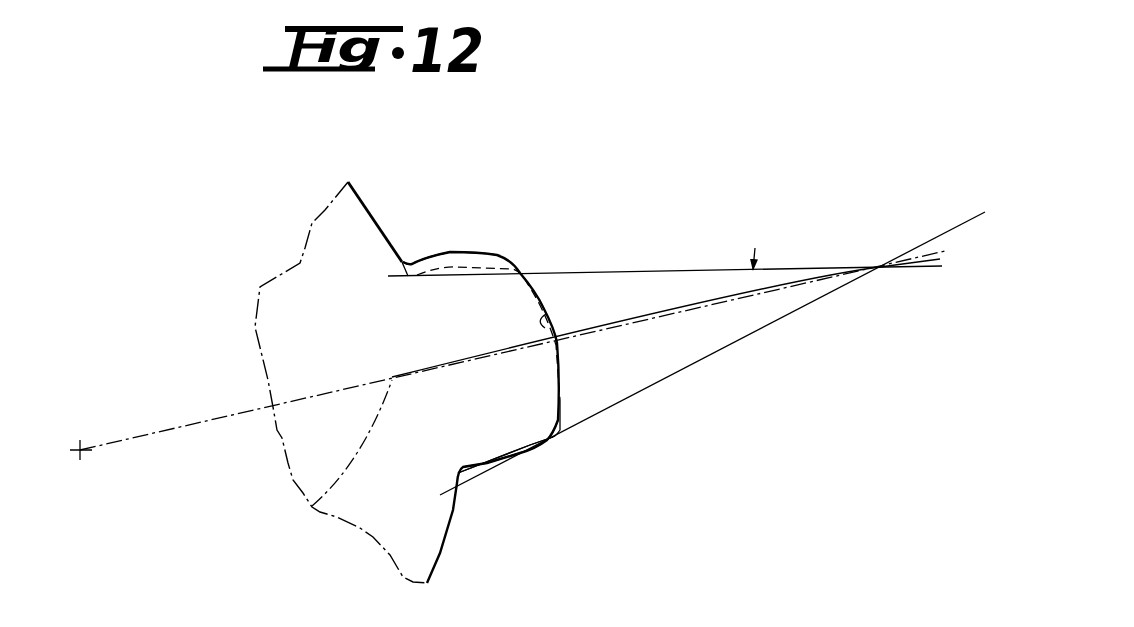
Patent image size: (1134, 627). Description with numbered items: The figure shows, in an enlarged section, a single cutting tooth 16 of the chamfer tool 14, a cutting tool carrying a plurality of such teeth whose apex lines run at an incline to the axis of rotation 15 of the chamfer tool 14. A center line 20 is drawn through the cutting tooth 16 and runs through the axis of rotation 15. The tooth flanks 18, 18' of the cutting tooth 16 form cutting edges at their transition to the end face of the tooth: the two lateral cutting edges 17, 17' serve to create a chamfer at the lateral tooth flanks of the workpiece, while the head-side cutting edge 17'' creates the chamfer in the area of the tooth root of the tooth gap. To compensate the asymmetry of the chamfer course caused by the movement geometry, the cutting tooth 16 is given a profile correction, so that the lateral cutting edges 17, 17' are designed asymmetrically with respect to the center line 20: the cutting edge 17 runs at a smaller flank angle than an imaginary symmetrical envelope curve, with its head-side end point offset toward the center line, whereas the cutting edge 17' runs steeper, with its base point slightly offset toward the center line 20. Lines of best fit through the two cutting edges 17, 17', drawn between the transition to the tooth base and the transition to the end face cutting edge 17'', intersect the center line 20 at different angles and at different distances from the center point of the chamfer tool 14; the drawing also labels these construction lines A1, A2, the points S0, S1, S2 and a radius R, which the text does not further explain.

The chamfer tool 14 is at (344, 231).
The axis of rotation 15 is at (80, 450).
The cutting tooth 16 is at (500, 318).
The cutting edge 17 is at (459, 209).
The cutting edge 17' is at (545, 493).
The head-side cutting edge 17'' is at (611, 262).
The tooth flank 18 is at (488, 314).
The tooth flank 18' is at (506, 502).
The center line 20 is at (313, 508).
The upper tangent line A1 is at (732, 270).
The lower tangent line A2 is at (704, 360).
The intersection point S0 is at (880, 268).
The point on A1 S1 is at (813, 267).
The point on A2 S2 is at (935, 237).
The radius line R is at (802, 285).